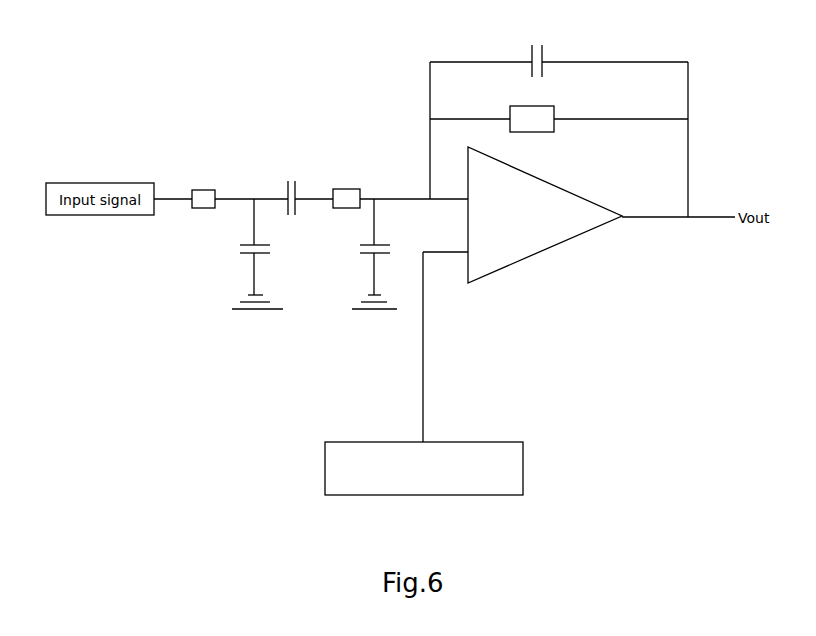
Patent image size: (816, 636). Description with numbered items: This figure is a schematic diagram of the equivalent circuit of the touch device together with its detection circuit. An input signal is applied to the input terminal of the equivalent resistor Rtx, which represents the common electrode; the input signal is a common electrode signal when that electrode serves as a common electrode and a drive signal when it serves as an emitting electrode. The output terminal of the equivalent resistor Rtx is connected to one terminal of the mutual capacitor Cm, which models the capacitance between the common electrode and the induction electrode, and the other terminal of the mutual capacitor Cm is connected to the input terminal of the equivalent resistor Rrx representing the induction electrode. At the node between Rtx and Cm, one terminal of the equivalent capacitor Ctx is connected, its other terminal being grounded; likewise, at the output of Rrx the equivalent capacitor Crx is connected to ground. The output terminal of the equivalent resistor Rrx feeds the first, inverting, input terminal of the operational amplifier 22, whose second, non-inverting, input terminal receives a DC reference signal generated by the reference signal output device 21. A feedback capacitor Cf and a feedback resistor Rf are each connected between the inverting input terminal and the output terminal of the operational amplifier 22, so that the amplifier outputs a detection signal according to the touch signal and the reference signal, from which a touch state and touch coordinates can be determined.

The reference signal output device 21 is at (467, 442).
The operational amplifier 22 is at (548, 250).
The equivalent resistor of the common electrode Rtx is at (203, 189).
The mutual capacitor Cm is at (290, 188).
The equivalent resistor of the induction electrode Rrx is at (346, 189).
The equivalent capacitor Ctx is at (240, 247).
The equivalent capacitor Crx is at (359, 247).
The feedback capacitor Cf is at (540, 50).
The feedback resistor Rf is at (532, 129).